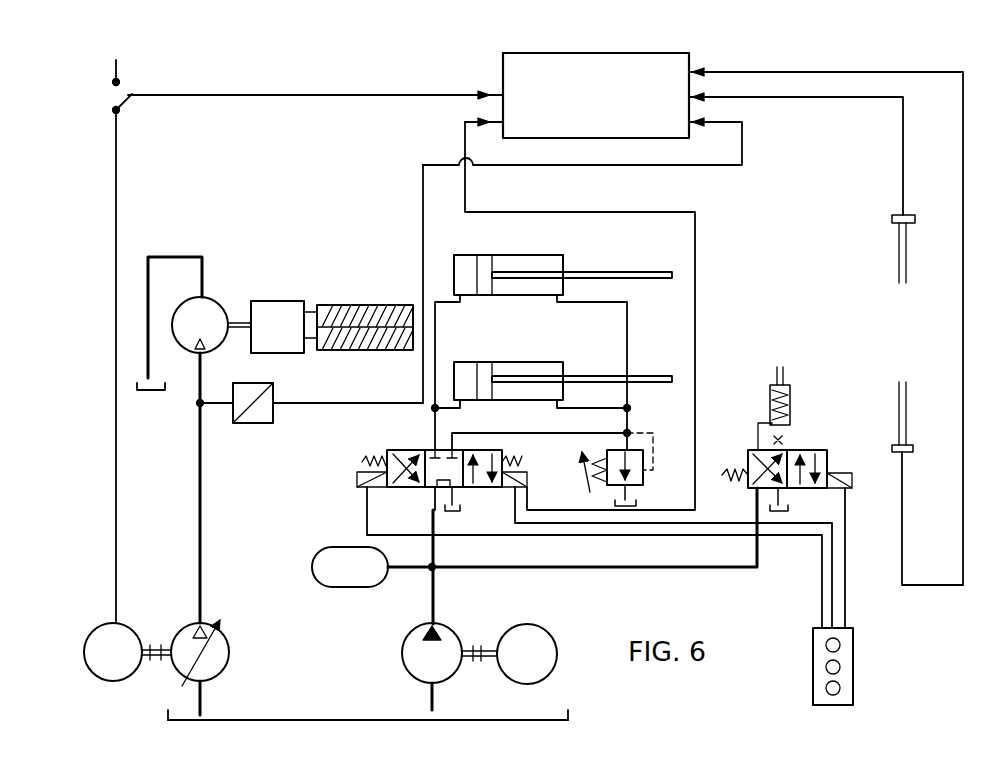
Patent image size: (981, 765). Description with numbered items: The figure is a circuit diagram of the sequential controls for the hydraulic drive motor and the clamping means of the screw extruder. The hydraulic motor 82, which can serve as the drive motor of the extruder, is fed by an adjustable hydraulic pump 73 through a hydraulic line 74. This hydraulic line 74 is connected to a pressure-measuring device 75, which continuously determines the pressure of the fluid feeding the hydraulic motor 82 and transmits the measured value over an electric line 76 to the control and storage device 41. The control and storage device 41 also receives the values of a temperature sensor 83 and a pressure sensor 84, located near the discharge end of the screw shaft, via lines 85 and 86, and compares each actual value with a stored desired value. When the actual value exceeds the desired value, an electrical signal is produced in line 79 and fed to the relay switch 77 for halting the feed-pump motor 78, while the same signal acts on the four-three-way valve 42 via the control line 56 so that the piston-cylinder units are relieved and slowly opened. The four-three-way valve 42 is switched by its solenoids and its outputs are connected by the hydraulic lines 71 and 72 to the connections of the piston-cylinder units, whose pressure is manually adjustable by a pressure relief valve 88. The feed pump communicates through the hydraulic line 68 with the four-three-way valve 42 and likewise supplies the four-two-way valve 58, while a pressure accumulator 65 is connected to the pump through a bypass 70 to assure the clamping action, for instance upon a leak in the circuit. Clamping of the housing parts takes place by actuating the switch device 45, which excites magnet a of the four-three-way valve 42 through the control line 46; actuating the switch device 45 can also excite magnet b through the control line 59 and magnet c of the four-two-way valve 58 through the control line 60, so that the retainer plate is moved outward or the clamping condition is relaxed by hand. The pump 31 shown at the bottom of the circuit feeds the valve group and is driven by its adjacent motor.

The hydraulic pump 31 is at (418, 670).
The control and storage device 41 is at (513, 73).
The 4/3-way valve 42 is at (403, 450).
The switch device 45 is at (853, 660).
The control line 46 is at (367, 520).
The control line 56 is at (575, 212).
The 4/2-way valve 58 is at (805, 450).
The control line 59 is at (835, 560).
The control line 60 is at (848, 512).
The pressure accumulator 65 is at (340, 585).
The hydraulic line 68 is at (436, 592).
The bypass 70 is at (405, 570).
The hydraulic line 71 is at (629, 324).
The hydraulic line 72 is at (435, 330).
The adjustable hydraulic pump 73 is at (226, 652).
The hydraulic line 74 is at (203, 500).
The pressure-measuring device 75 is at (255, 423).
The electric line 76 is at (423, 208).
The relay switch 77 is at (133, 94).
The feed-pump motor 78 is at (126, 413).
The line 79 is at (298, 95).
The hydraulic motor 82 is at (215, 315).
The temperature sensor 83 is at (900, 385).
The pressure sensor 84 is at (898, 247).
The line 85 is at (963, 305).
The line 86 is at (798, 100).
The pressure relief valve 88 is at (643, 477).